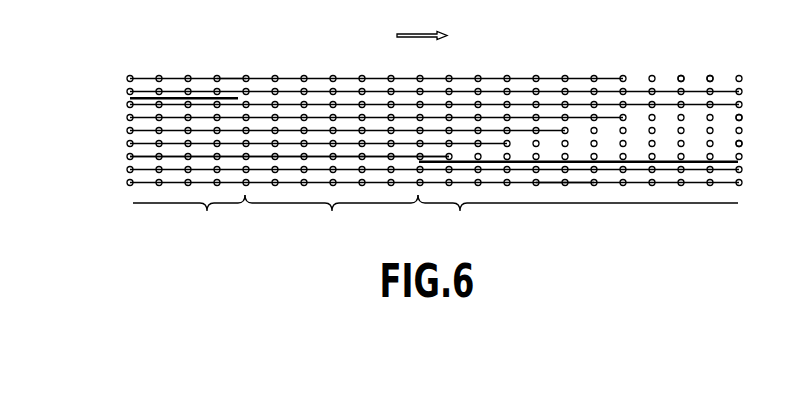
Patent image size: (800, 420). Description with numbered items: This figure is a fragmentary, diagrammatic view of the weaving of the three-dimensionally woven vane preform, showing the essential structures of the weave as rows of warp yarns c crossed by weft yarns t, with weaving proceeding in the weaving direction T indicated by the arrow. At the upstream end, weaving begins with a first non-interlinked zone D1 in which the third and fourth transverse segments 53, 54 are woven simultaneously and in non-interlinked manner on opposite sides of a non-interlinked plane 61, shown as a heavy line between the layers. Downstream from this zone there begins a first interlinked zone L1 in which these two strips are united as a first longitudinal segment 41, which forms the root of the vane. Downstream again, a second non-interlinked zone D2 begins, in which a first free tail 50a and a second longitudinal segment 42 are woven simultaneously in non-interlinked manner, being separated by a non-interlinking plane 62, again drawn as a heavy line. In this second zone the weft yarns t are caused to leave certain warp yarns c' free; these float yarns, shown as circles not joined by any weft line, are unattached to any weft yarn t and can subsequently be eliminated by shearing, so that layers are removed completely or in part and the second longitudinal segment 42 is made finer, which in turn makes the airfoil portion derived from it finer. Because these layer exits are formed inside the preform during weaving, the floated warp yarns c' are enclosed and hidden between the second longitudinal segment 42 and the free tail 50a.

The first free tail 50a is at (638, 173).
The fourth transverse segment 54 is at (168, 82).
The third transverse segment 53 is at (175, 153).
The first longitudinal segment 41 is at (316, 130).
The second longitudinal segment 42 is at (637, 100).
The non-interlinked plane 61 is at (131, 99).
The non-interlinking plane 62 is at (719, 161).
The warp yarns c is at (432, 110).
The floated warp yarns c' is at (731, 94).
The weft yarns t is at (260, 92).
The first non-interlinked zone D1 is at (189, 217).
The first interlinked zone L1 is at (331, 217).
The second non-interlinked zone D2 is at (446, 217).
The weaving direction T is at (422, 49).